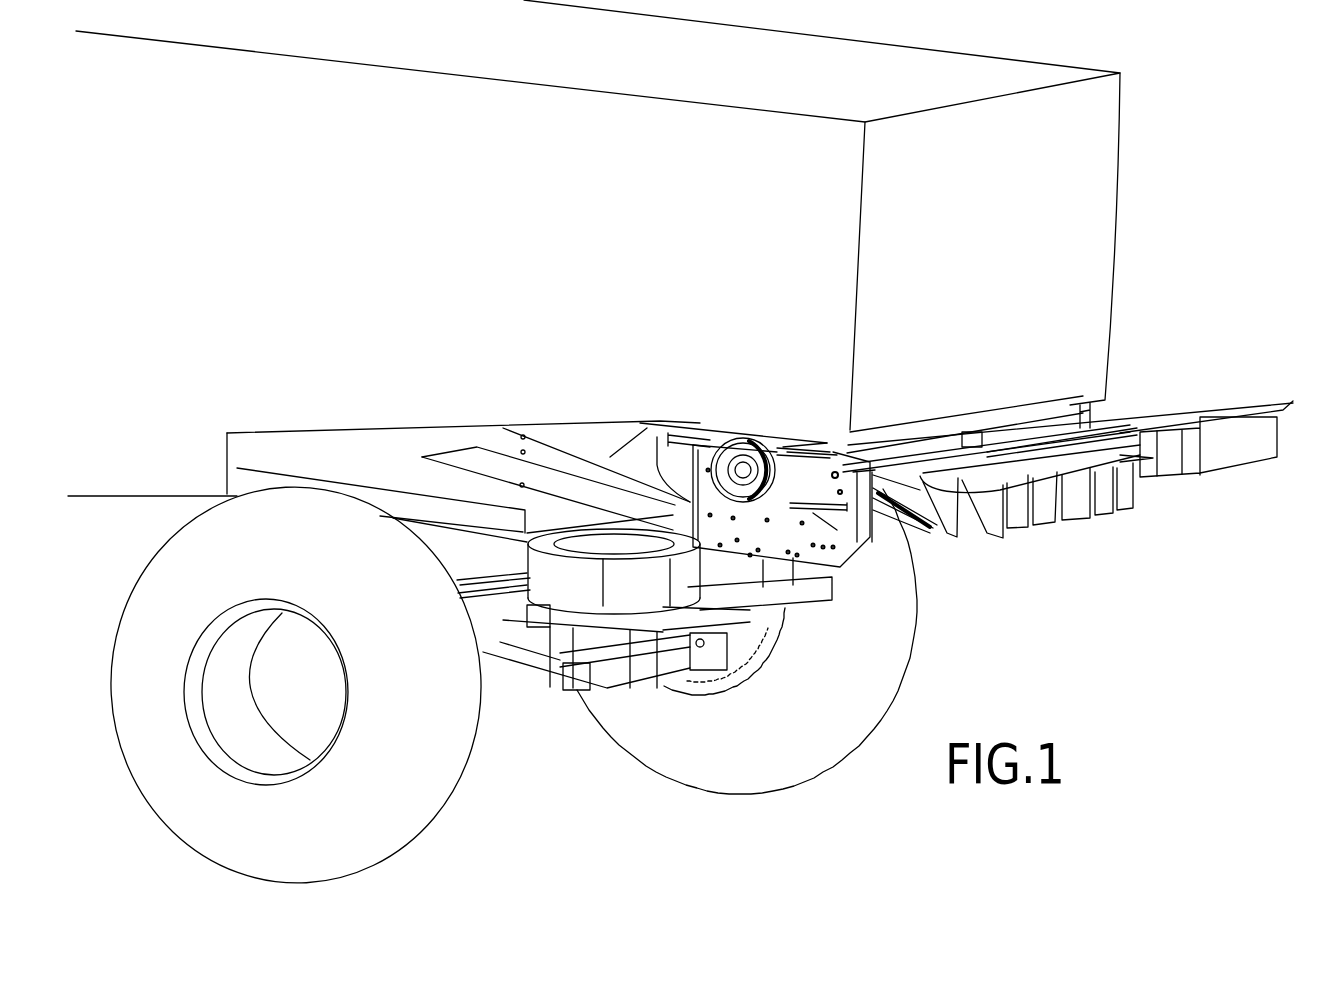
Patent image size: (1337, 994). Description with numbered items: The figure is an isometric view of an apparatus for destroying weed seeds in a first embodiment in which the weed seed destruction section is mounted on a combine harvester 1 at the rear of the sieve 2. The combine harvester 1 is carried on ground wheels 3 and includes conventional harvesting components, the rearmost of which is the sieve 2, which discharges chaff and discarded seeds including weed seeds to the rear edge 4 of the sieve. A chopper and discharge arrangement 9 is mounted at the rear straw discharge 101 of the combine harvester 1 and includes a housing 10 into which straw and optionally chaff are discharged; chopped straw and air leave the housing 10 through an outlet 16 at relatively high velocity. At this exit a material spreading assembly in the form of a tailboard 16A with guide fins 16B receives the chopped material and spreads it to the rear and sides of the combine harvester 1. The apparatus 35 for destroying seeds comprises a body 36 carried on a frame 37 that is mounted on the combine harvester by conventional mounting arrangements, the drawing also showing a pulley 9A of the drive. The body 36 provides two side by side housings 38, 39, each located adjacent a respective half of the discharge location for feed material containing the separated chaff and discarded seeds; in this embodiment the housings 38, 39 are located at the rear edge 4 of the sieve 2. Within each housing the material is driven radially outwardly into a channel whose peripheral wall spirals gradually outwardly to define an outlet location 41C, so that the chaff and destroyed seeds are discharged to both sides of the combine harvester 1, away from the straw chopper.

The combine harvester 1 is at (1093, 305).
The sieve 2 is at (408, 467).
The ground wheels 3 is at (450, 728).
The rear edge of the sieve 4 is at (577, 525).
The chopper and discharge arrangement 9 is at (788, 428).
The pulley 9A is at (742, 447).
The housing 10 is at (795, 493).
The rear straw discharge 101 is at (955, 423).
The outlet 16 is at (922, 523).
The tailboard 16A is at (1193, 425).
The guide fins 16B is at (1170, 465).
The apparatus for destroying seeds 35 is at (506, 584).
The body 36 is at (822, 616).
The frame 37 is at (712, 655).
The housing 38 is at (643, 592).
The housing 39 is at (757, 575).
The outlet location 41C is at (577, 633).